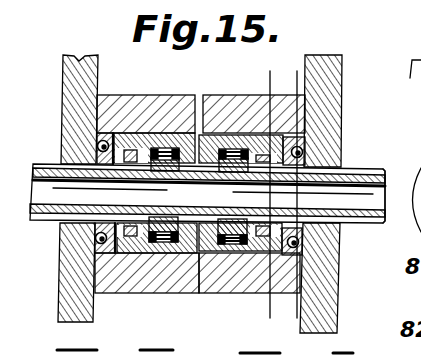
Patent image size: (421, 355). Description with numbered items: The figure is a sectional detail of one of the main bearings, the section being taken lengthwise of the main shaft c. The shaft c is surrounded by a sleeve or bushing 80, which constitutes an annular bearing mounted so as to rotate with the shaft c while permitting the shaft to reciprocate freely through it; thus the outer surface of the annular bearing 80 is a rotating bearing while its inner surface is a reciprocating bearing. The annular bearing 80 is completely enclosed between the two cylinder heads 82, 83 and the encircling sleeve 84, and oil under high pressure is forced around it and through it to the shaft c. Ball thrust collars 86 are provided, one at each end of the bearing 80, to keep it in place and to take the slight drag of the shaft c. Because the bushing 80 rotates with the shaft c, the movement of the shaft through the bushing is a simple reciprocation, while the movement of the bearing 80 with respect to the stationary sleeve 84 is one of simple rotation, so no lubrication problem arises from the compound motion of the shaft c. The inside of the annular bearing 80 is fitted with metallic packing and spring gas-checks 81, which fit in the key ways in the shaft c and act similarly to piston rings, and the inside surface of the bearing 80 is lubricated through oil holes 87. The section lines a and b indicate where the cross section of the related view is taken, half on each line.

The sleeve or bushing 80 is at (212, 140).
The metallic packing and spring gas-checks 81 is at (183, 311).
The cylinder head 82 is at (80, 62).
The cylinder head 83 is at (328, 115).
The encircling sleeve 84 is at (118, 98).
The ball thrust collar 86 is at (97, 147).
The oil hole 87 is at (207, 193).
The section line a— a is at (281, 70).
The section line b— b is at (303, 70).
The shaft c is at (348, 203).